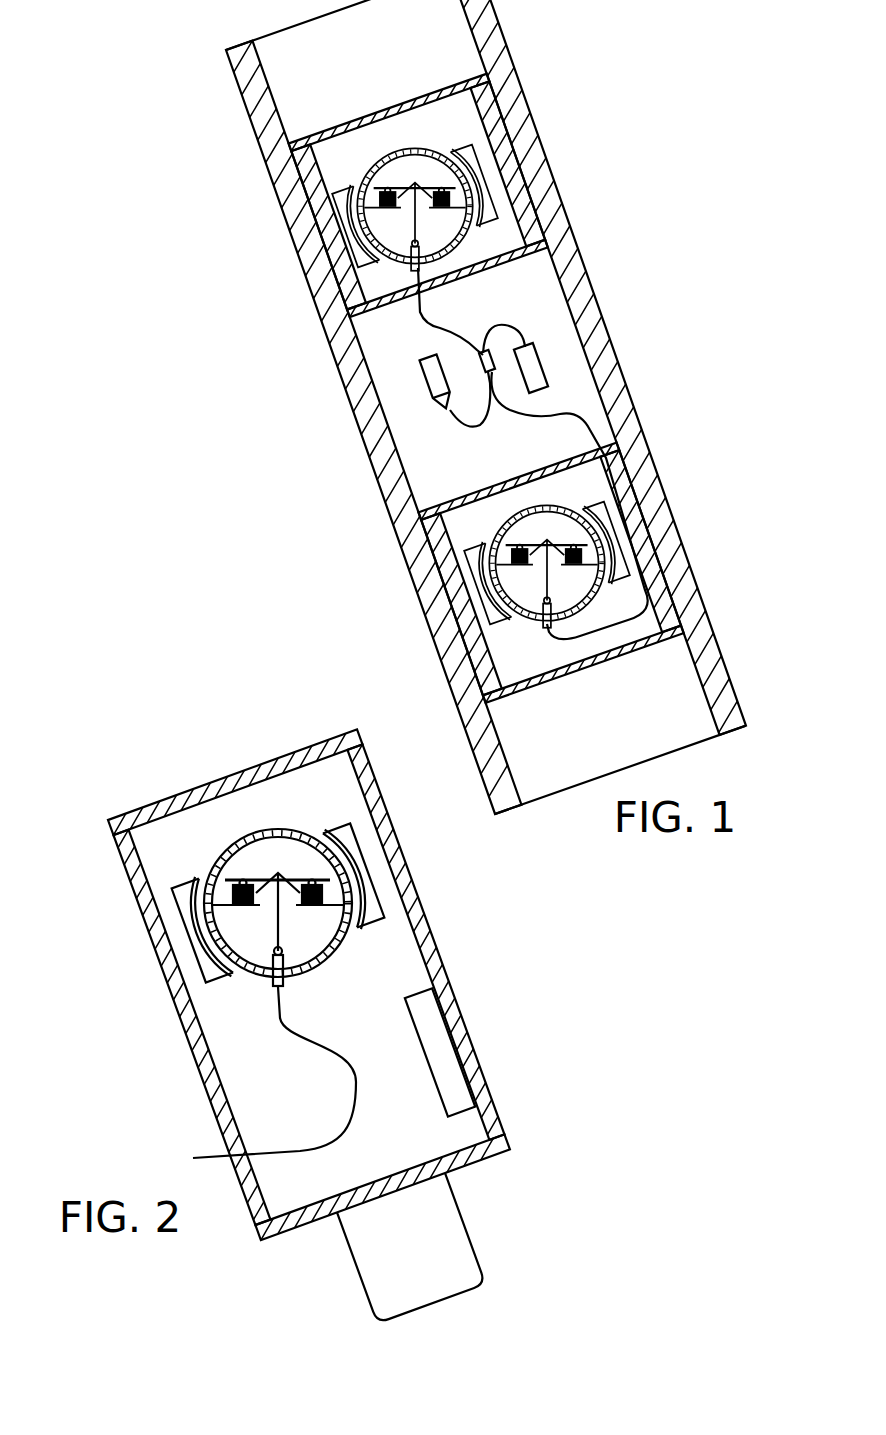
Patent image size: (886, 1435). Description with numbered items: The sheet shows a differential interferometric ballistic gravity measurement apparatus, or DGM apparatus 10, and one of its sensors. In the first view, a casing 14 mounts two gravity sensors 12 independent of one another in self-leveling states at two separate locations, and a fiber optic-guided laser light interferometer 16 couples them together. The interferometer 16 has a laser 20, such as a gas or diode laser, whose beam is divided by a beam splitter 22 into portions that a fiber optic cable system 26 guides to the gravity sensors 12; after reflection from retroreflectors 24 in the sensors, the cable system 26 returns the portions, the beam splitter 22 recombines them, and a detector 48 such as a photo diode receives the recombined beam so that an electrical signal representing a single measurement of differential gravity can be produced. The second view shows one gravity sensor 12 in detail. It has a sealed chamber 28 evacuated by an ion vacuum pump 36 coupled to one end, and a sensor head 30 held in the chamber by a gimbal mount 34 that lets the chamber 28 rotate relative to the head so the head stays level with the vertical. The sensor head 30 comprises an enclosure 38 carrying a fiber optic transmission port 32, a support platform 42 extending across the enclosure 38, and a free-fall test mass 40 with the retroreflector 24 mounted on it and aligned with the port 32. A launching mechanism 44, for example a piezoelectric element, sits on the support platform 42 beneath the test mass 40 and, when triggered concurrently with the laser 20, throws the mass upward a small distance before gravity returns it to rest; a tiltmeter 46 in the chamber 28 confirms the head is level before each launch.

In FIG. 1, the DGM apparatus 10 is at (409, 407).
In FIG. 1, the gravity sensor 12 is at (496, 383).
In FIG. 2, the gravity sensor 12 is at (308, 1020).
In FIG. 1, the casing 14 is at (642, 395).
In FIG. 1, the fiber optic-guided laser light interferometer 16 is at (395, 350).
In FIG. 1, the laser 20 is at (428, 386).
In FIG. 1, the beam splitter 22 is at (482, 372).
In FIG. 1, the retroreflector 24 is at (590, 500).
In FIG. 2, the retroreflector 24 is at (283, 870).
In FIG. 1, the fiber optic cable system 26 is at (537, 427).
In FIG. 2, the fiber optic cable system 26 is at (342, 1073).
In FIG. 1, the sealed chamber 28 is at (548, 678).
In FIG. 2, the sealed chamber 28 is at (405, 862).
In FIG. 1, the sensor head 30 is at (466, 371).
In FIG. 2, the sensor head 30 is at (282, 863).
In FIG. 1, the fiber optic transmission port 32 is at (562, 612).
In FIG. 2, the fiber optic transmission port 32 is at (272, 984).
In FIG. 2, the gimbal mount 34 is at (185, 925).
In FIG. 2, the ion vacuum pump 36 is at (465, 1222).
In FIG. 1, the enclosure 38 is at (525, 512).
In FIG. 2, the enclosure 38 is at (328, 960).
In FIG. 1, the free-fall test mass 40 is at (522, 545).
In FIG. 2, the free-fall test mass 40 is at (310, 886).
In FIG. 1, the support platform 42 is at (632, 578).
In FIG. 2, the support platform 42 is at (232, 968).
In FIG. 1, the launching mechanism 44 is at (508, 556).
In FIG. 2, the launching mechanism 44 is at (237, 892).
In FIG. 2, the tiltmeter 46 is at (445, 1066).
In FIG. 1, the detector 48 is at (540, 357).